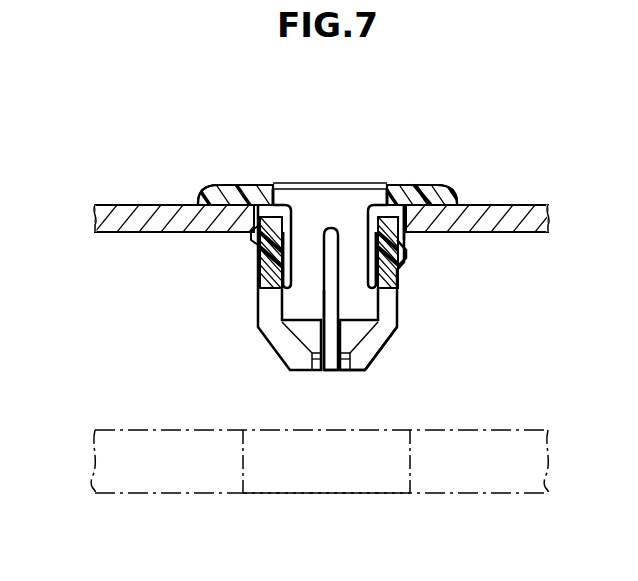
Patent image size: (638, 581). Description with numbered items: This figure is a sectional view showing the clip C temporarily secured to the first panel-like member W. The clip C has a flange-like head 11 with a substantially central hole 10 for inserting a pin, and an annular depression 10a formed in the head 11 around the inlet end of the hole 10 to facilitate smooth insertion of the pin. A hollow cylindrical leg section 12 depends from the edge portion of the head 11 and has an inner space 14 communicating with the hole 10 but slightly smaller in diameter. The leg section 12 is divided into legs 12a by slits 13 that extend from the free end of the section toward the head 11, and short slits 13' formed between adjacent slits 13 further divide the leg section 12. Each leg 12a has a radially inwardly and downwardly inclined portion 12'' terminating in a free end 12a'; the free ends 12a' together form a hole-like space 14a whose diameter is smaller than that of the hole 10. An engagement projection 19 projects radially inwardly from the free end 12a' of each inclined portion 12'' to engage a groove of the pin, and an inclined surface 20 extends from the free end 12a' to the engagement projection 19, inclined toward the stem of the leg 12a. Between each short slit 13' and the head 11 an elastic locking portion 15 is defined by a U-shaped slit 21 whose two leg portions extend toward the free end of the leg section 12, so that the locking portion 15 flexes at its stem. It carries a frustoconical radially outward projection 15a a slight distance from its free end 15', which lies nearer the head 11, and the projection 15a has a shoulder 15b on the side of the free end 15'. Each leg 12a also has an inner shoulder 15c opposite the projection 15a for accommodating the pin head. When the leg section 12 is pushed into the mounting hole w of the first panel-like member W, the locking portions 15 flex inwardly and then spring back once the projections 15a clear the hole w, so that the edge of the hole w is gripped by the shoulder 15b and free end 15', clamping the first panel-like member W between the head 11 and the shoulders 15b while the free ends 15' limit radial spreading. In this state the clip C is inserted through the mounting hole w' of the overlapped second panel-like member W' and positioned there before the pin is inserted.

The hole 10 is at (307, 200).
The annular depression 10a is at (276, 185).
The flange-like head 11 is at (460, 190).
The leg section 12 is at (360, 287).
The leg 12a is at (326, 345).
The inclined portion 12'' is at (411, 361).
The free end 12a' is at (384, 391).
The slit 13 is at (336, 242).
The short slit 13' is at (264, 330).
The inner space 14 is at (263, 267).
The hole-like space 14a is at (323, 371).
The elastic locking portion 15 is at (360, 258).
The radially outward projection 15a is at (412, 240).
The shoulder 15b is at (430, 204).
The inner shoulder 15c is at (379, 207).
The free end 15' is at (432, 163).
The engagement projection 19 is at (340, 372).
The inclined surface 20 is at (347, 372).
The U-shaped slit 21 is at (362, 207).
The clip C is at (202, 187).
The first panel-like member W is at (333, 190).
The mounting hole w is at (239, 170).
The second panel-like member W' is at (319, 436).
The mounting hole w' is at (326, 517).